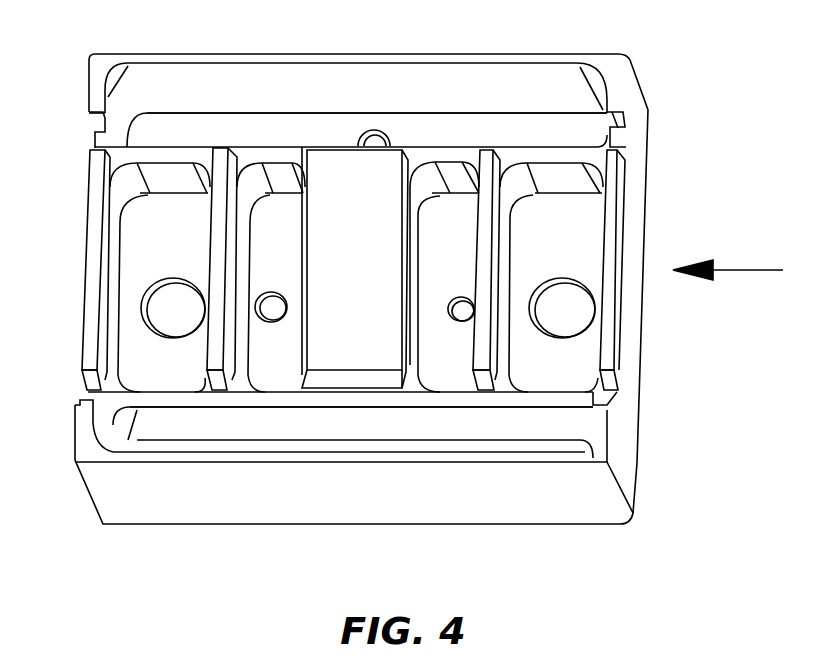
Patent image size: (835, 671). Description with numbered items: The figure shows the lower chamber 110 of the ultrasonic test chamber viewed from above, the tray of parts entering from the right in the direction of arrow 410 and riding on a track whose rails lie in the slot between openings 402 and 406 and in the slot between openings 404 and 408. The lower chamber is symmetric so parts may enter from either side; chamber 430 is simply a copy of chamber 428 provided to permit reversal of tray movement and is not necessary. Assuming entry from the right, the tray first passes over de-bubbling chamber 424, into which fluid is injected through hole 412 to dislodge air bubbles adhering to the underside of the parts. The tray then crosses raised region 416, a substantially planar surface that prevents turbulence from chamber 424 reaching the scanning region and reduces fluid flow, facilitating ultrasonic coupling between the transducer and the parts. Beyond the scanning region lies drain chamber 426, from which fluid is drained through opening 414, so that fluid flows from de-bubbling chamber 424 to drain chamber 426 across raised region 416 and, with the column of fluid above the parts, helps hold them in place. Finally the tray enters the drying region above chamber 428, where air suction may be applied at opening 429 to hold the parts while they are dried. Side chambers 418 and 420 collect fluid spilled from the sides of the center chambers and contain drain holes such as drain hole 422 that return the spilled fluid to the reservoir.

The lower chamber 110 is at (172, 588).
The opening 402 is at (97, 140).
The opening 404 is at (88, 398).
The opening 406 is at (623, 140).
The opening 408 is at (613, 400).
The arrow 410 is at (733, 268).
The hole 412 is at (462, 307).
The opening 414 is at (270, 307).
The raised region 416 is at (350, 352).
The side chamber 418 is at (457, 447).
The side chamber 420 is at (427, 130).
The drain hole 422 is at (372, 128).
The de-bubbling chamber 424 is at (450, 232).
The drain chamber 426 is at (265, 232).
The chamber 428 is at (153, 233).
The opening 429 is at (172, 307).
The chamber 430 is at (585, 225).